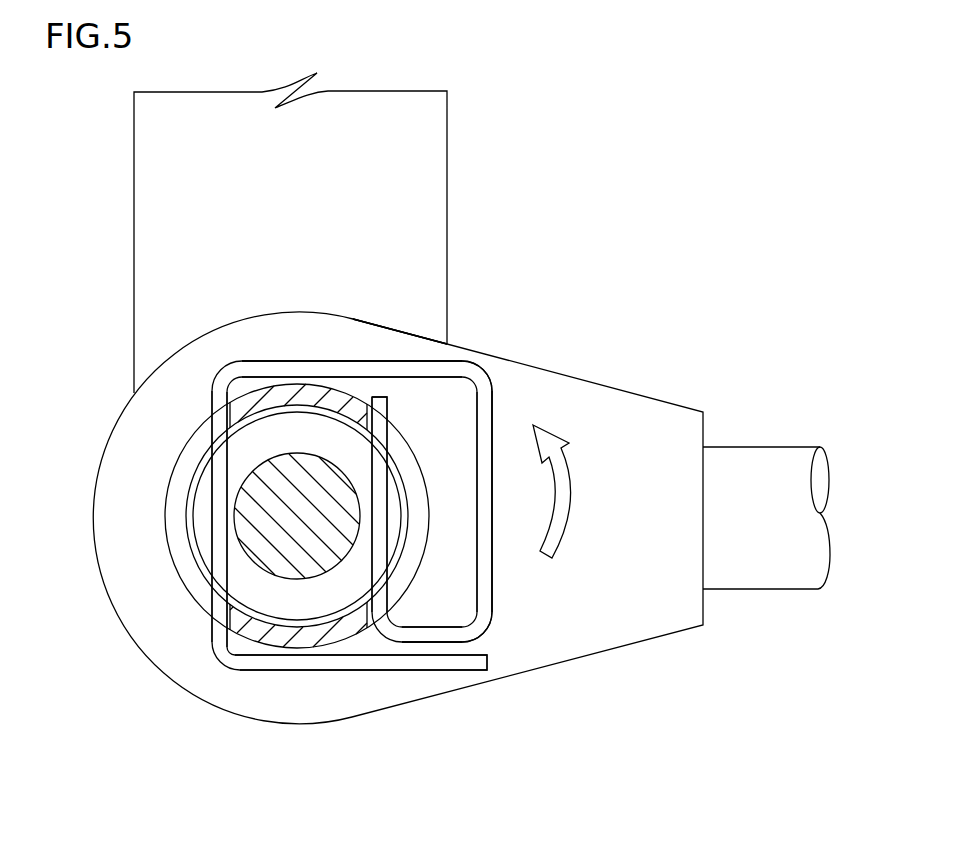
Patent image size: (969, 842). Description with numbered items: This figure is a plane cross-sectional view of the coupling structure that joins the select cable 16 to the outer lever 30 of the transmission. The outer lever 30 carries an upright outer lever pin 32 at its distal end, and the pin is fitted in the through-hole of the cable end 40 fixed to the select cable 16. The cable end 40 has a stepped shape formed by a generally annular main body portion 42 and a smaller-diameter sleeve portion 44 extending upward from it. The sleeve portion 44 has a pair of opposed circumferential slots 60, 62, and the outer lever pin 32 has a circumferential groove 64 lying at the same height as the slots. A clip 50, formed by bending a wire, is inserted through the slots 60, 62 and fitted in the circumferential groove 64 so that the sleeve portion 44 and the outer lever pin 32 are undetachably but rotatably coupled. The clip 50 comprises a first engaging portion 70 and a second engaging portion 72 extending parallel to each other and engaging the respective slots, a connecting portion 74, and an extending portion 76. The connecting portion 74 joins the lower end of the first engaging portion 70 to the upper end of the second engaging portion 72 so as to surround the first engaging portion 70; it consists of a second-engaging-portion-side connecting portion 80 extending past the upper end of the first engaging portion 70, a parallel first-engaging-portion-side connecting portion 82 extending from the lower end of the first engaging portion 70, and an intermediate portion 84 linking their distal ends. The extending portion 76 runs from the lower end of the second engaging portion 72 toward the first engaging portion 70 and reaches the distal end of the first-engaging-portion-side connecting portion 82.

The select cable 16 is at (772, 470).
The outer lever 30 is at (162, 178).
The outer lever pin 32 is at (273, 518).
The cable end 40 is at (507, 235).
The main body portion 42 is at (395, 347).
The sleeve portion 44 is at (298, 395).
The clip 50 is at (182, 395).
The slot 60 is at (402, 575).
The slot 62 is at (187, 567).
The circumferential groove 64 is at (253, 452).
The first engaging portion 70 is at (378, 557).
The second engaging portion 72 is at (220, 600).
The connecting portion 74 is at (478, 797).
The extending portion 76 is at (318, 663).
The second-engaging-portion-side connecting portion 80 is at (437, 370).
The first-engaging-portion-side connecting portion 82 is at (445, 632).
The intermediate portion 84 is at (483, 555).